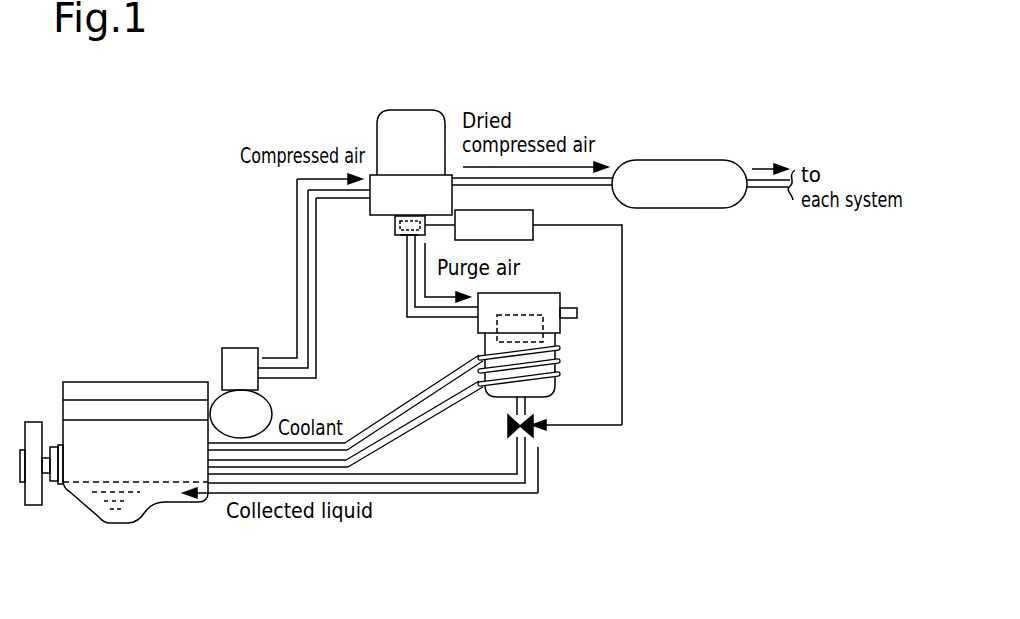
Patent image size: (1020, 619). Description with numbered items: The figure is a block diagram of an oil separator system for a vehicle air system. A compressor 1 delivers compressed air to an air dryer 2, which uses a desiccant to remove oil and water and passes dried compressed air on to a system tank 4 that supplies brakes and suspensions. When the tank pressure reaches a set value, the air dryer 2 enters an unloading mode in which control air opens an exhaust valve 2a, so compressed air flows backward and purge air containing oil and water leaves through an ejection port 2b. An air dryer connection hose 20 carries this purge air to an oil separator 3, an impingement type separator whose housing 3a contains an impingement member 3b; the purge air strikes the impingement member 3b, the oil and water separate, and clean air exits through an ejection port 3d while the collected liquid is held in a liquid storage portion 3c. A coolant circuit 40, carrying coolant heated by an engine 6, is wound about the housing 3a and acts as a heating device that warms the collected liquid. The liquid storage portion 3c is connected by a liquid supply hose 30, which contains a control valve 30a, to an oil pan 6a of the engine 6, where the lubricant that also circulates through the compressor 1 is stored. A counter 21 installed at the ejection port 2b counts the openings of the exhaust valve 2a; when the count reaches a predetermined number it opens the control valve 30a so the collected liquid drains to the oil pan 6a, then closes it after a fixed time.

The compressor 1 is at (250, 347).
The air dryer 2 is at (408, 110).
The exhaust valve 2a is at (395, 222).
The ejection port 2b is at (400, 236).
The air dryer connection hose 20 is at (407, 297).
The counter 21 is at (518, 212).
The oil separator 3 is at (546, 292).
The housing 3a is at (558, 340).
The impingement member 3b is at (492, 328).
The liquid storage portion 3c is at (555, 392).
The ejection port 3d is at (568, 308).
The liquid supply hose 30 is at (418, 474).
The control valve 30a is at (508, 426).
The system tank 4 is at (700, 160).
The coolant circuit 40 is at (380, 424).
The engine 6 is at (133, 380).
The oil pan 6a is at (163, 504).